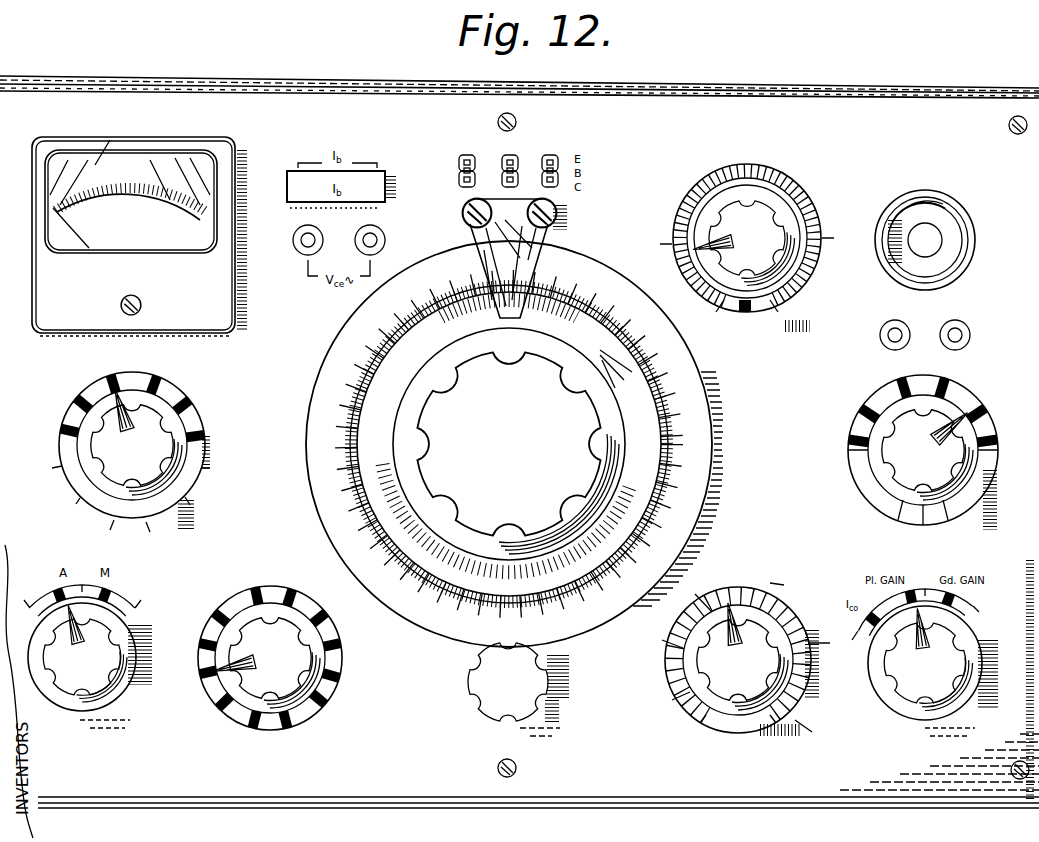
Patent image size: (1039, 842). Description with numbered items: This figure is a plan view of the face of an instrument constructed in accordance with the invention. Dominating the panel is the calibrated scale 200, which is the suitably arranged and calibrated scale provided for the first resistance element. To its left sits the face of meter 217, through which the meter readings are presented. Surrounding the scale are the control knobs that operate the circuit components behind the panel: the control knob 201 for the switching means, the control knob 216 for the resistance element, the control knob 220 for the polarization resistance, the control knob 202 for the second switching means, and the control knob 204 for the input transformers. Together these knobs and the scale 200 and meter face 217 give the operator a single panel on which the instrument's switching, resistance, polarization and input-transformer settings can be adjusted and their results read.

The calibrated scale 200 is at (338, 332).
The control knob for switching means 201 is at (181, 448).
The control knob for switching means 2 202 is at (880, 476).
The control knob for the input transformers 204 is at (325, 690).
The control knob for resistance 16 216 is at (776, 206).
The face of meter 217 is at (208, 166).
The control knob for polarization resistance 220 is at (752, 610).